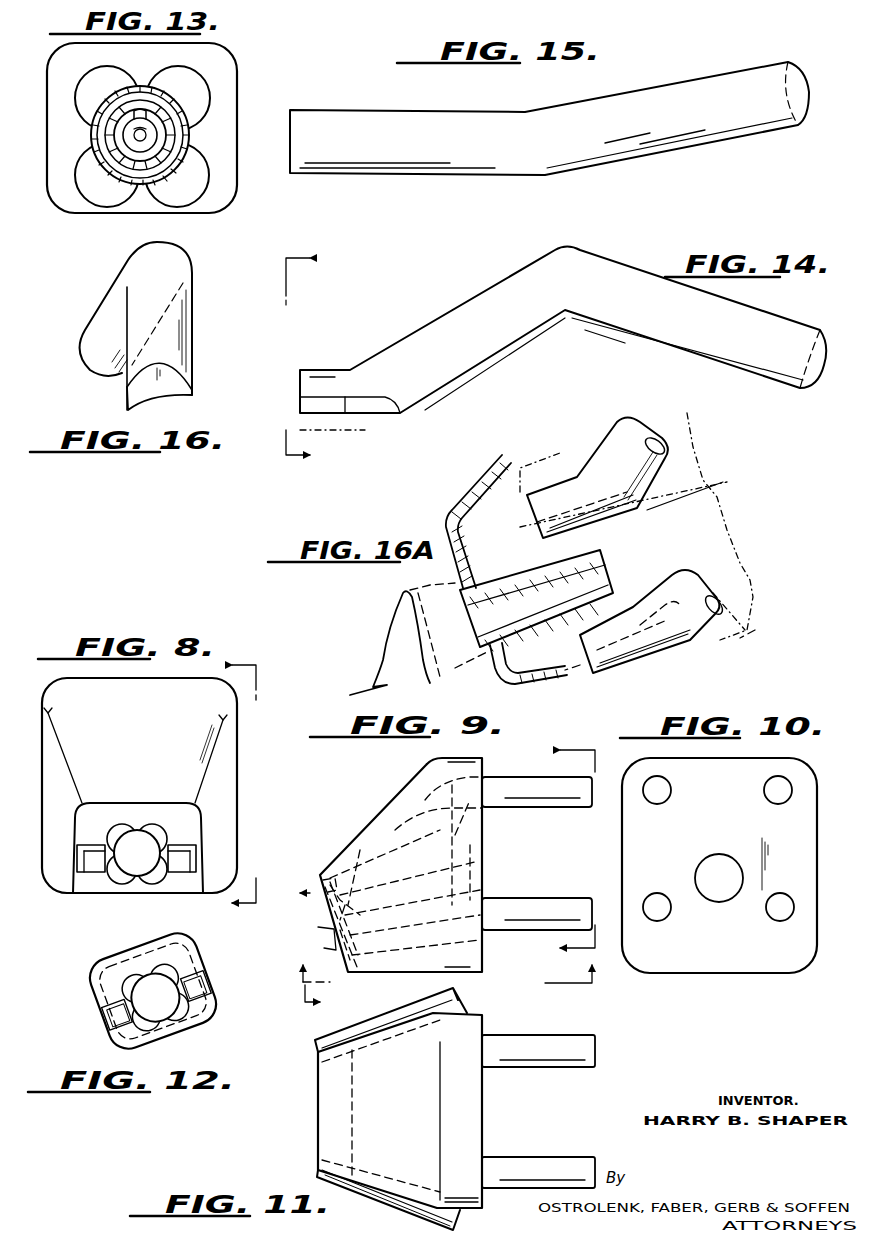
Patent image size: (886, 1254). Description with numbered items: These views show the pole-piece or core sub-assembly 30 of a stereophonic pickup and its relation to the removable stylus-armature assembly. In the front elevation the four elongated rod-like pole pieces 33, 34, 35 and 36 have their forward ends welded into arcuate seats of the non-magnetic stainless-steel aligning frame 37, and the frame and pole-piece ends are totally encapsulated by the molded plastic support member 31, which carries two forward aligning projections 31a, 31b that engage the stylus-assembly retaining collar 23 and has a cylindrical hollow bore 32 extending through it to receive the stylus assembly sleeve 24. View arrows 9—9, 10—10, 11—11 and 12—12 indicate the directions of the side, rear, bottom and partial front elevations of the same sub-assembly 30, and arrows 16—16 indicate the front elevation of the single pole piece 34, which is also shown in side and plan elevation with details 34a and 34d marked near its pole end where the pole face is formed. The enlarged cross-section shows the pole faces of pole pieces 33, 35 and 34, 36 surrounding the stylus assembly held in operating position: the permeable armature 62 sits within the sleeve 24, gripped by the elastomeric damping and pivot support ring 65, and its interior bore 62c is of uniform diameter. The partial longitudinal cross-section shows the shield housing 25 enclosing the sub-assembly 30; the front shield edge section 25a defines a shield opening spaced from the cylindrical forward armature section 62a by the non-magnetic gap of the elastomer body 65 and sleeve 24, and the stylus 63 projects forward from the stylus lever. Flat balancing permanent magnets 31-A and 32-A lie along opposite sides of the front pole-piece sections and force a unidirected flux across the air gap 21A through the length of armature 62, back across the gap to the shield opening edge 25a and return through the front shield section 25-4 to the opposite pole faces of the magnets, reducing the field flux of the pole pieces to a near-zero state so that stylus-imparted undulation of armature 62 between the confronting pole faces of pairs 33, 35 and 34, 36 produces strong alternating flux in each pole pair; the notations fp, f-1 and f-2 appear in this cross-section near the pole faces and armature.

In FIG. 8, the view arrows 9— 9 is at (232, 785).
In FIG. 9, the view arrows 10— 10 is at (565, 849).
In FIG. 9, the view arrows 11— 11 is at (453, 965).
In FIG. 9, the view arrows 12— 12 is at (319, 947).
In FIG. 14, the view arrows 16— 16 is at (311, 357).
In FIG. 16A, the air gap 21A is at (630, 610).
In FIG. 9, the retaining collar member 23 is at (322, 874).
In FIG. 11, the retaining collar member 23 is at (391, 1106).
In FIG. 13, the stylus assembly sleeve 24 is at (143, 183).
In FIG. 16A, the stylus assembly sleeve 24 is at (420, 586).
In FIG. 16A, the shield housing 25 is at (465, 492).
In FIG. 16A, the front shield edge section 25a is at (457, 572).
In FIG. 16A, the front shield section 25-4 is at (505, 462).
In FIG. 8, the pole piece sub-assembly 30 is at (238, 772).
In FIG. 12, the pole piece sub-assembly 30 is at (88, 999).
In FIG. 9, the pole piece sub-assembly 30 is at (400, 796).
In FIG. 10, the pole piece sub-assembly 30 is at (730, 826).
In FIG. 11, the pole piece sub-assembly 30 is at (418, 1121).
In FIG. 8, the plastic pole piece support 31 is at (159, 800).
In FIG. 12, the plastic pole piece support 31 is at (214, 1003).
In FIG. 9, the plastic pole piece support 31 is at (426, 782).
In FIG. 16A, the balancing permanent magnet 31-A is at (672, 420).
In FIG. 9, the balancing permanent magnet 31-A is at (358, 845).
In FIG. 11, the balancing permanent magnet 31-A is at (318, 1050).
In FIG. 8, the forward aligning projection 31a is at (90, 866).
In FIG. 12, the forward aligning projection 31a is at (100, 1018).
In FIG. 8, the forward aligning projection 31b is at (180, 866).
In FIG. 12, the forward aligning projection 31b is at (210, 984).
In FIG. 9, the forward aligning projection 31b is at (320, 937).
In FIG. 13, the hollow space bore 32 is at (150, 100).
In FIG. 9, the hollow space bore 32 is at (478, 845).
In FIG. 10, the hollow space bore 32 is at (722, 888).
In FIG. 11, the balancing permanent magnet 32-A is at (318, 1172).
In FIG. 13, the pole piece 33 is at (190, 93).
In FIG. 8, the pole piece 33 is at (154, 829).
In FIG. 12, the pole piece 33 is at (183, 952).
In FIG. 9, the pole piece 33 is at (541, 795).
In FIG. 10, the pole piece 33 is at (659, 804).
In FIG. 11, the pole piece 33 is at (506, 1160).
In FIG. 13, the pole piece 34 is at (100, 92).
In FIG. 15, the pole piece 34 is at (662, 86).
In FIG. 14, the pole piece 34 is at (480, 283).
In FIG. 16, the pole piece 34 is at (200, 358).
In FIG. 16A, the pole piece 34 is at (637, 457).
In FIG. 8, the pole piece 34 is at (116, 829).
In FIG. 12, the pole piece 34 is at (118, 983).
In FIG. 10, the pole piece 34 is at (775, 804).
In FIG. 11, the pole piece 34 is at (517, 1065).
In FIG. 14, the pin end portion 34a is at (366, 413).
In FIG. 16, the pin end portion 34a is at (157, 392).
In FIG. 16A, the pin contact surface 34d is at (685, 503).
In FIG. 13, the pole piece 35 is at (96, 190).
In FIG. 8, the pole piece 35 is at (120, 875).
In FIG. 12, the pole piece 35 is at (152, 1035).
In FIG. 10, the pole piece 35 is at (780, 921).
In FIG. 13, the pole piece 36 is at (186, 187).
In FIG. 16A, the pole piece 36 is at (705, 636).
In FIG. 8, the pole piece 36 is at (150, 877).
In FIG. 12, the pole piece 36 is at (182, 1020).
In FIG. 9, the pole piece 36 is at (554, 898).
In FIG. 10, the pole piece 36 is at (662, 921).
In FIG. 13, the aligning frame 37 is at (236, 163).
In FIG. 13, the armature 62 is at (168, 137).
In FIG. 16A, the armature 62 is at (470, 622).
In FIG. 16A, the forward armature section 62a is at (525, 645).
In FIG. 16A, the interior armature bore 62c is at (602, 574).
In FIG. 16A, the stylus 63 is at (372, 696).
In FIG. 13, the elastomeric damping and pivot support ring 65 is at (100, 130).
In FIG. 16A, the pressure force fp is at (622, 465).
In FIG. 16A, the force component f-1 is at (520, 545).
In FIG. 16A, the force component f-2 is at (600, 470).